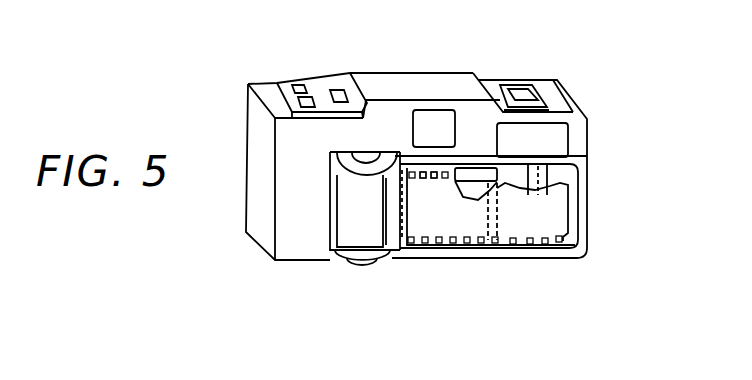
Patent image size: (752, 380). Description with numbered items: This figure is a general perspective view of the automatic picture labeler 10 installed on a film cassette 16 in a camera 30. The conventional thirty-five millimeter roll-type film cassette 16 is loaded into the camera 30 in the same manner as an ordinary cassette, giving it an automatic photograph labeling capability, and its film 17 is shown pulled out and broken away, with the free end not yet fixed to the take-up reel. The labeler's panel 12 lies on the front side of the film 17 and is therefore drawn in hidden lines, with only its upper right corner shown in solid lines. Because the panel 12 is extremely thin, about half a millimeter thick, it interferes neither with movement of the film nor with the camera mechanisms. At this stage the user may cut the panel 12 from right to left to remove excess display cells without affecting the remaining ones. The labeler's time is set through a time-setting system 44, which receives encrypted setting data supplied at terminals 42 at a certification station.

The labeler 10 is at (457, 275).
The panel 12 is at (472, 218).
The film cassette 16 is at (348, 210).
The film 17 is at (558, 217).
The camera 30 is at (300, 275).
The terminals 42 is at (421, 172).
The time-setting system 44 is at (437, 172).